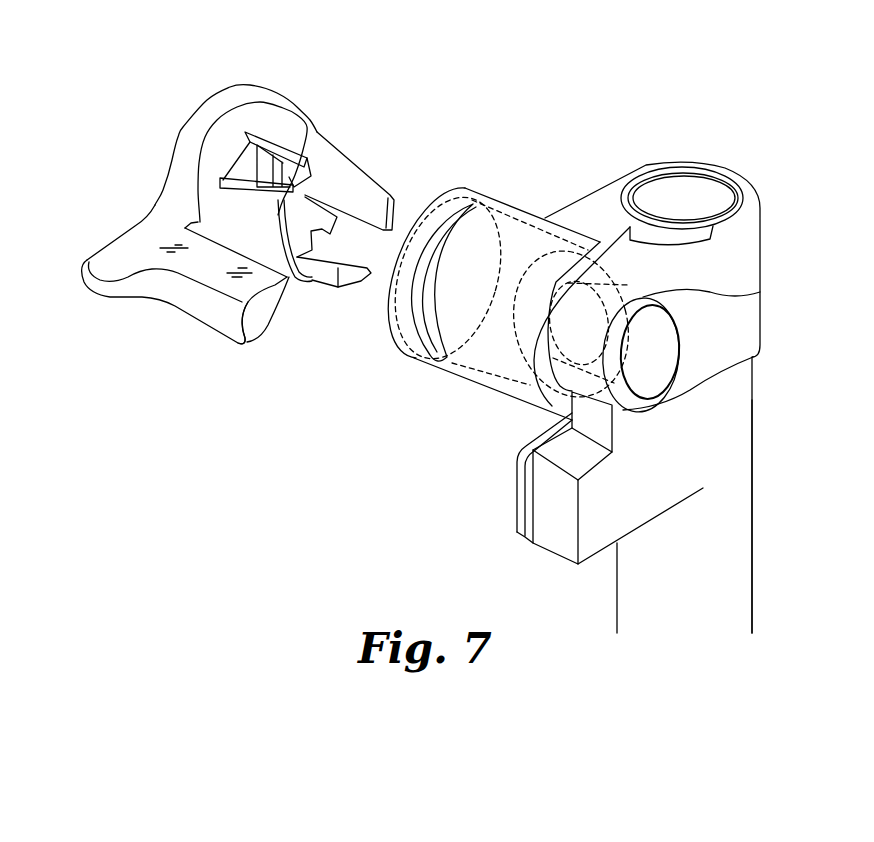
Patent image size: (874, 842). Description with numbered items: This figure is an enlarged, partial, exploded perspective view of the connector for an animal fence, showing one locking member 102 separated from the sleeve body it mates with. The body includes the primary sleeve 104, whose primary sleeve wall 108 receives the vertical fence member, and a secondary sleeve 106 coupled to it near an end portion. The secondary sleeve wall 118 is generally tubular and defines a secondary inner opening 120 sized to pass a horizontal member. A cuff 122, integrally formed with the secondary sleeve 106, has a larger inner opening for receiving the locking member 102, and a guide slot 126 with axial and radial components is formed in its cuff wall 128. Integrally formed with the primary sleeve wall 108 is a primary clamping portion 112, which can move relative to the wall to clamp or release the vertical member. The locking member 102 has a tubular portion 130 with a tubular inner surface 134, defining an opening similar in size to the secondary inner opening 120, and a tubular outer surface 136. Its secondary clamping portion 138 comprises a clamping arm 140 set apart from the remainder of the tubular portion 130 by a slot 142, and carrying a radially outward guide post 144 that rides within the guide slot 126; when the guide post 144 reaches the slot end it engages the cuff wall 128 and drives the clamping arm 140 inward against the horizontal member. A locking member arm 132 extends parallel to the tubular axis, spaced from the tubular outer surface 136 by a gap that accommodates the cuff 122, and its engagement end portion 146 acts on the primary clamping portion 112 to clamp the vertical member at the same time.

The locking member 102 is at (242, 227).
The primary sleeve 104 is at (610, 383).
The secondary sleeve 106 is at (634, 278).
The primary sleeve wall 108 is at (737, 537).
The primary clamping portion 112 is at (513, 481).
The secondary sleeve wall 118 is at (720, 371).
The secondary inner opening 120 is at (642, 378).
The cuff 122 is at (510, 276).
The guide slot 126 is at (450, 226).
The cuff wall 128 is at (460, 377).
The tubular portion 130 is at (263, 165).
The locking member arm 132 is at (186, 309).
The tubular inner surface 134 is at (362, 284).
The tubular outer surface 136 is at (287, 125).
The secondary clamping portion 138 is at (242, 158).
The clamping arm 140 is at (256, 170).
The slot 142 is at (337, 145).
The guide post 144 is at (222, 182).
The engagement end portion 146 is at (248, 333).